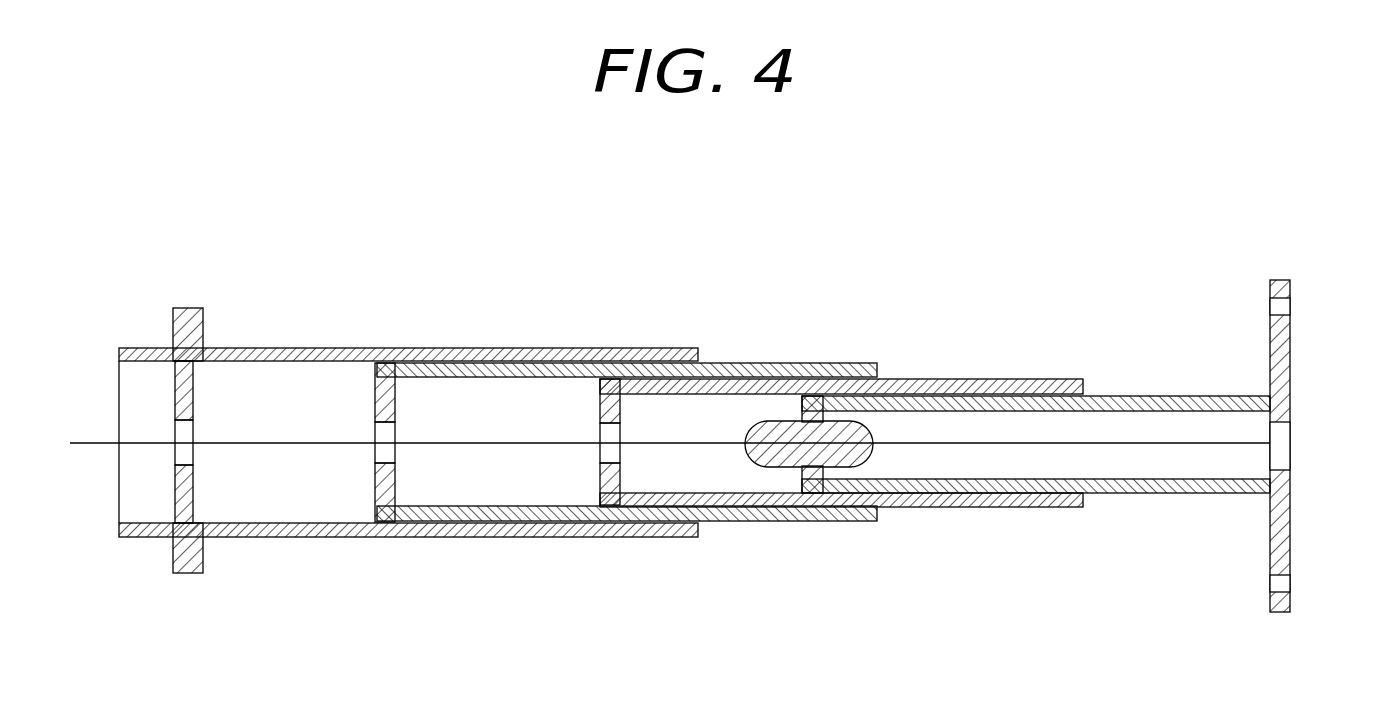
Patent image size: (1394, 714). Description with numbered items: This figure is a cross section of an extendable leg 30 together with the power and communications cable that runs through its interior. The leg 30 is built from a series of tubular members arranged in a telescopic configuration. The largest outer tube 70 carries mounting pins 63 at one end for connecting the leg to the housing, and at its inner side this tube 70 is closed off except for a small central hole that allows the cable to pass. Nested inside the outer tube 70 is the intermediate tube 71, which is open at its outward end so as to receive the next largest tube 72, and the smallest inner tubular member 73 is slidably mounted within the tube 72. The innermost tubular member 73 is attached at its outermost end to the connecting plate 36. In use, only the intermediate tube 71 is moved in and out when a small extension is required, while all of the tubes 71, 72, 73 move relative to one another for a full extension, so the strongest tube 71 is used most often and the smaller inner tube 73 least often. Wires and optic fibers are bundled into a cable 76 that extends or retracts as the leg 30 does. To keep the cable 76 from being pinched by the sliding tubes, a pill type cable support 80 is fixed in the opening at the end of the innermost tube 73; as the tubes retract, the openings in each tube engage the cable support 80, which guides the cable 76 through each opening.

The leg 30 is at (722, 212).
The connecting plate 36 is at (1292, 342).
The mounting pins 63 is at (190, 308).
The largest outer tube 70 is at (185, 393).
The intermediate tube 71 is at (378, 393).
The next largest tube 72 is at (598, 390).
The smallest inner tubular member 73 is at (789, 380).
The cable 76 is at (508, 443).
The pill type cable support 80 is at (782, 468).